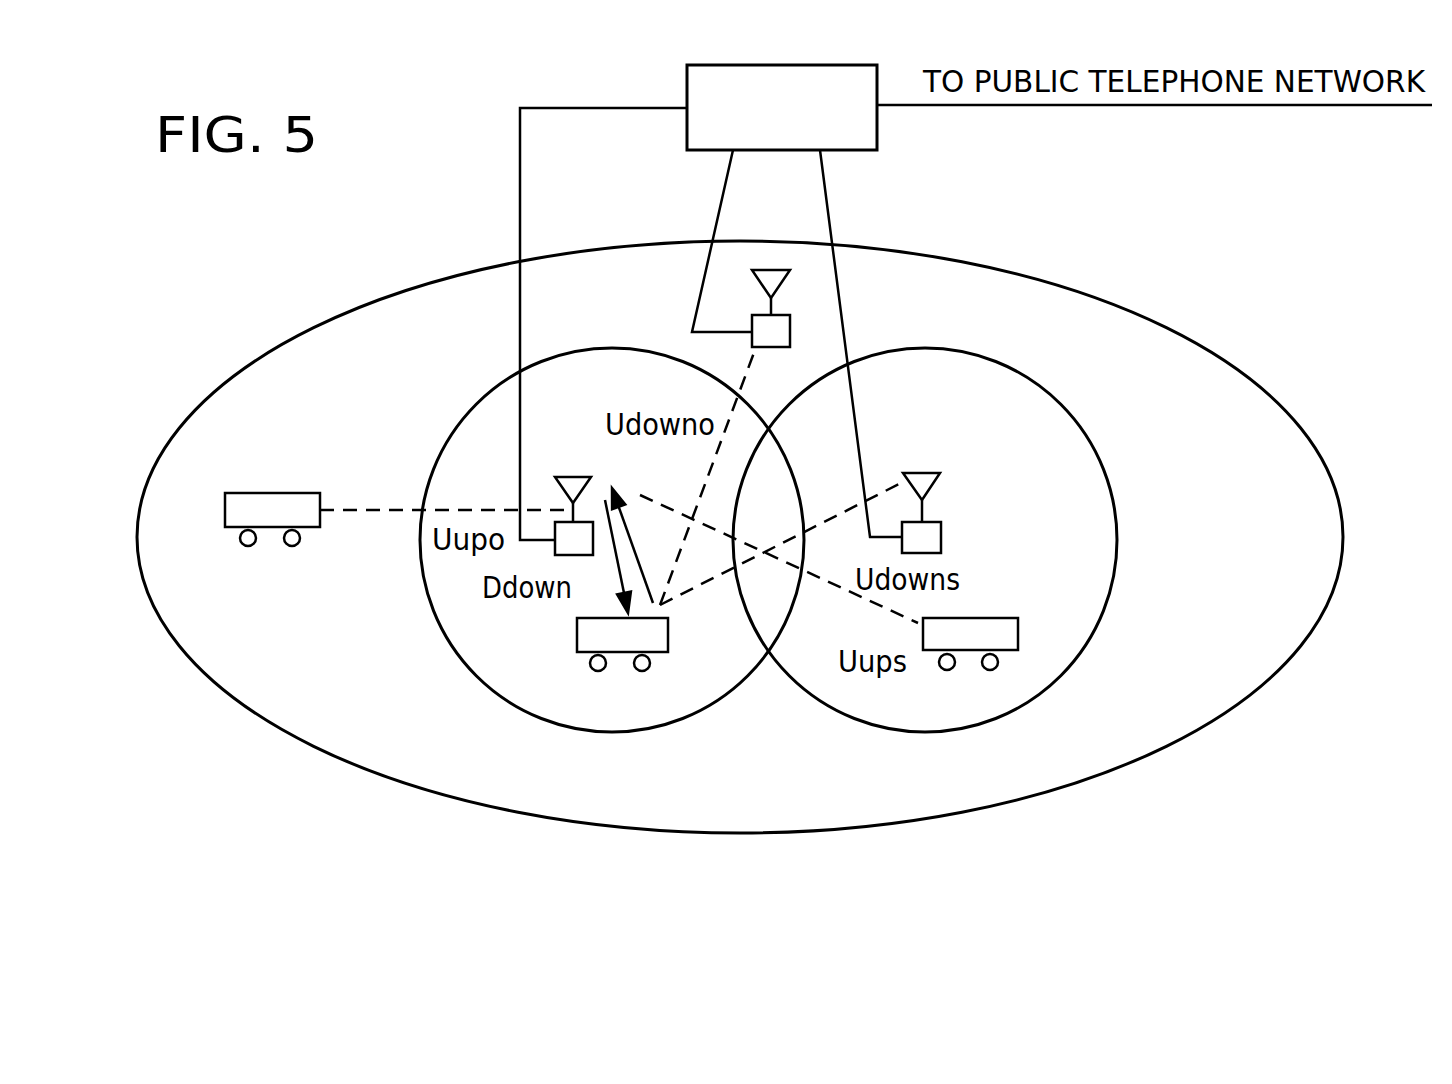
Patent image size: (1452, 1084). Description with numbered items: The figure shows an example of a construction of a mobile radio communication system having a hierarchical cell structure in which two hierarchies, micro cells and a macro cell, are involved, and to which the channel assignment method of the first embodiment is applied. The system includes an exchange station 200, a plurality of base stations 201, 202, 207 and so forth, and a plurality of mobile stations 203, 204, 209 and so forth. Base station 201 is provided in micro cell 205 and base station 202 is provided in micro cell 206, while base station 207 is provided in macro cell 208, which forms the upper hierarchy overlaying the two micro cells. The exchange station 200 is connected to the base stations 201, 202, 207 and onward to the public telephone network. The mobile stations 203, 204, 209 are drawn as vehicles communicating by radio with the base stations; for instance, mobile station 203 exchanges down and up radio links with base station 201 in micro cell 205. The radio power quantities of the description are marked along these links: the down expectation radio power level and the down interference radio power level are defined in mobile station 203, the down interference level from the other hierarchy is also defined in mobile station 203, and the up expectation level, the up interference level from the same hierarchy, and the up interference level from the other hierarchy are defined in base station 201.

The exchange station 200 is at (693, 152).
The base station 201 is at (580, 477).
The base station 202 is at (928, 473).
The mobile station 203 is at (577, 636).
The mobile station 204 is at (1005, 618).
The micro cell 205 is at (473, 407).
The micro cell 206 is at (1091, 444).
The base station 207 is at (792, 325).
The macro cell 208 is at (1038, 272).
The mobile station 209 is at (268, 527).